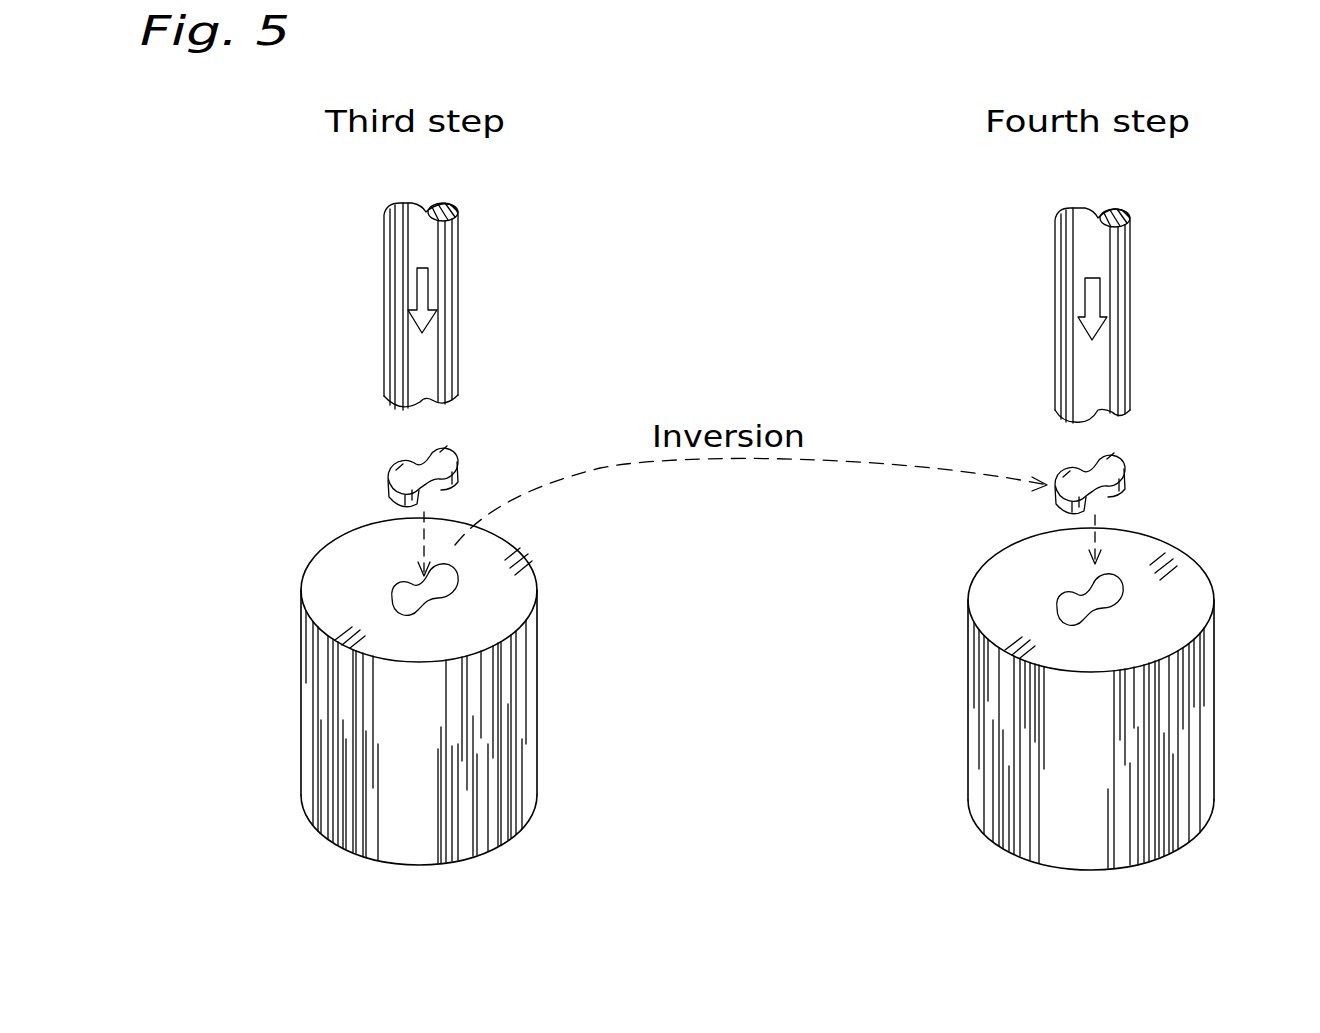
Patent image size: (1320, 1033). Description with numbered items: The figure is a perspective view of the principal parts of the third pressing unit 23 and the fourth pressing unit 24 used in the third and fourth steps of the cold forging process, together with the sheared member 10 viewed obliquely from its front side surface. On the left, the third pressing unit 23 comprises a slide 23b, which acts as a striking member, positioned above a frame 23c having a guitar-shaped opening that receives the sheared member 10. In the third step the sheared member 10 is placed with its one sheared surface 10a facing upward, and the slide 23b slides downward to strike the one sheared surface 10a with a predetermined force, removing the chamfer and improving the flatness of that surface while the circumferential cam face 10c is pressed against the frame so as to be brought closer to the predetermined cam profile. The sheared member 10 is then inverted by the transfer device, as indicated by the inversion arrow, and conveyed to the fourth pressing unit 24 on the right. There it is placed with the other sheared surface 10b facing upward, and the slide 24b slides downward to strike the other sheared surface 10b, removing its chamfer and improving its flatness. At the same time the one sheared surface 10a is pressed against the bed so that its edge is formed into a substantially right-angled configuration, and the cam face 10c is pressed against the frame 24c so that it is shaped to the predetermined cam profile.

The sheared member 10 is at (390, 463).
The one sheared surface 10a is at (440, 447).
The other sheared surface 10b is at (1068, 470).
The cam face 10c is at (390, 498).
The third pressing unit 23 is at (320, 377).
The slide of the third pressing unit 23b is at (383, 263).
The frame of the third pressing unit 23c is at (312, 680).
The fourth pressing unit 24 is at (1015, 383).
The slide of the fourth pressing unit 24b is at (1130, 278).
The frame of the fourth pressing unit 24c is at (1197, 727).